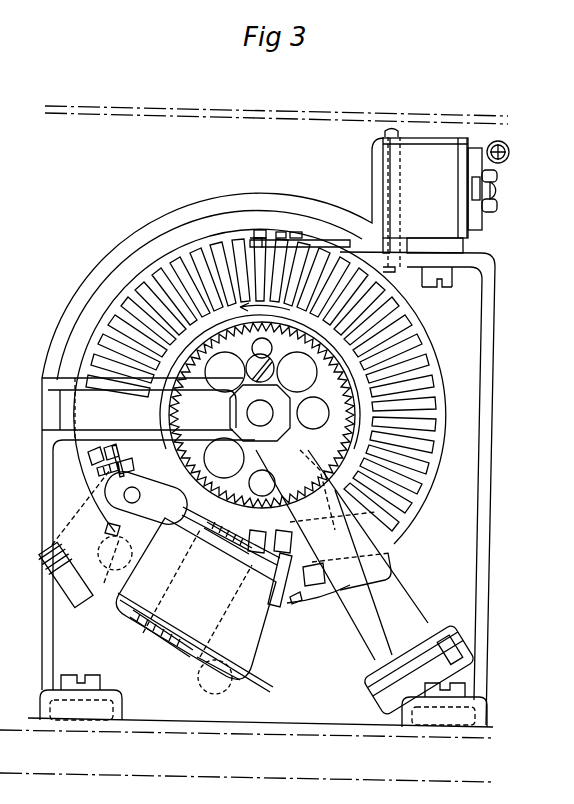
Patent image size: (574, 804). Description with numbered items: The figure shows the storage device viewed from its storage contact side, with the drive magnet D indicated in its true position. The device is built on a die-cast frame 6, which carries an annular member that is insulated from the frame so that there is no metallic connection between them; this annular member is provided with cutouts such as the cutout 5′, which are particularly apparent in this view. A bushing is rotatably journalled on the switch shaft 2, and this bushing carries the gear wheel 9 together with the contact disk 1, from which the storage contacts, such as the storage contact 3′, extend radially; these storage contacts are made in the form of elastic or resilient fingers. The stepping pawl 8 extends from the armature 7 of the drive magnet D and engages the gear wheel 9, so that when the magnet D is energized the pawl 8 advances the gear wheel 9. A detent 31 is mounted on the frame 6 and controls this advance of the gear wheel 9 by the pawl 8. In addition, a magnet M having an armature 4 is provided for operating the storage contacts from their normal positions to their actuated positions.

The contact disk 1 is at (168, 365).
The switch shaft 2 is at (256, 412).
The storage contact 3′ is at (268, 232).
The armature 4 is at (322, 241).
The cutout 5′ is at (259, 232).
The die-cast frame 6 is at (78, 390).
The armature 7 is at (272, 557).
The stepping pawl 8 is at (303, 553).
The gear wheel 9 is at (365, 583).
The detent 31 is at (352, 407).
The drive magnet D is at (148, 597).
The magnet M is at (445, 213).